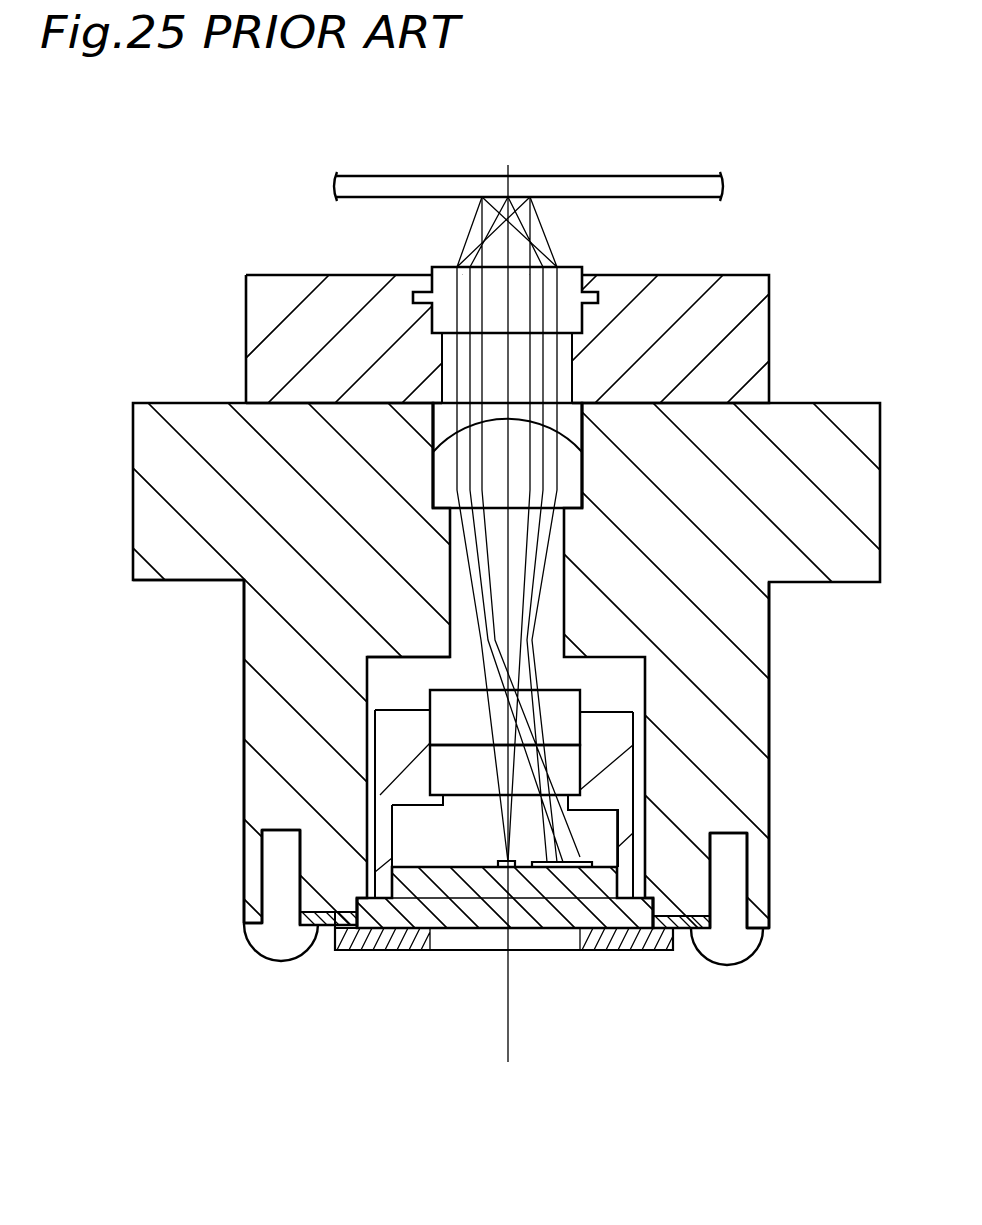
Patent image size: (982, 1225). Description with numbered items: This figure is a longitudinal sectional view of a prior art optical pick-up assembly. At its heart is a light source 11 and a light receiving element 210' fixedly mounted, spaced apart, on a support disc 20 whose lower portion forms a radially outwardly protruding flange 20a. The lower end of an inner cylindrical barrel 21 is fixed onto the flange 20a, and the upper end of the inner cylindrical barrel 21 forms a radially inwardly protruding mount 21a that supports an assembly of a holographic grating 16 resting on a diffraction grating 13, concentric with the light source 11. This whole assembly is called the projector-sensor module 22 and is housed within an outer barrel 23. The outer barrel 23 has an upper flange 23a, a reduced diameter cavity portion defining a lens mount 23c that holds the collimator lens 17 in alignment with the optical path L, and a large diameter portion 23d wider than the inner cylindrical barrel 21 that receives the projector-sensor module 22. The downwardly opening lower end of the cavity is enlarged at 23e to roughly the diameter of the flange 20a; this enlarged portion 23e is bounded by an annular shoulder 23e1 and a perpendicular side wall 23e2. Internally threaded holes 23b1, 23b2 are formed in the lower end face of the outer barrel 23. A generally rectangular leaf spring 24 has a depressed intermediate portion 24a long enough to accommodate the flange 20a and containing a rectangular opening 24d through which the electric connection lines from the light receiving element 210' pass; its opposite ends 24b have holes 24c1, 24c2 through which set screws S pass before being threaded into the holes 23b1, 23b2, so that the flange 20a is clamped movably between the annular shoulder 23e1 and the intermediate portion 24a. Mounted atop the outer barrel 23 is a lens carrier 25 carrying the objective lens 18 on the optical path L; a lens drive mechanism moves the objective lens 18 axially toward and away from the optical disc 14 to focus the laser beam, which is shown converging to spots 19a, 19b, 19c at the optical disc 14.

The optical disc 14 is at (722, 190).
The optical path L is at (506, 1040).
The main beam spot 19a is at (511, 197).
The sub beam spot 19b is at (531, 198).
The sub beam spot 19c is at (484, 199).
The objective lens 18 is at (582, 272).
The lens carrier 25 is at (296, 288).
The collimator lens 17 is at (575, 466).
The outer barrel 23 is at (243, 643).
The radially outwardly protruding flange 23a is at (192, 560).
The lens mount 23c is at (436, 494).
The large diameter portion 23d is at (367, 672).
The internally threaded hole 23b1 is at (260, 846).
The internally threaded hole 23b2 is at (763, 890).
The set screw S is at (748, 872).
The radially outwardly enlarged portion 23e is at (353, 903).
The annular shoulder 23e1 is at (722, 850).
The side wall 23e2 is at (748, 940).
The projector-sensor module 22 is at (358, 733).
The inner cylindrical barrel 21 is at (628, 817).
The radially inwardly protruding mount 21a is at (625, 728).
The holographic grating 16 is at (573, 700).
The diffraction grating 13 is at (573, 770).
The light source 11 is at (502, 878).
The photodetector 210' is at (578, 934).
The support disc 20 is at (613, 940).
The radially outwardly protruding flange 20a is at (657, 950).
The leaf spring 24 is at (335, 950).
The intermediate portion 24a is at (420, 942).
The rectangular opening 24d is at (528, 950).
The opposite ends 24b is at (755, 1010).
The hole 24c1 is at (238, 923).
The hole 24c2 is at (763, 925).